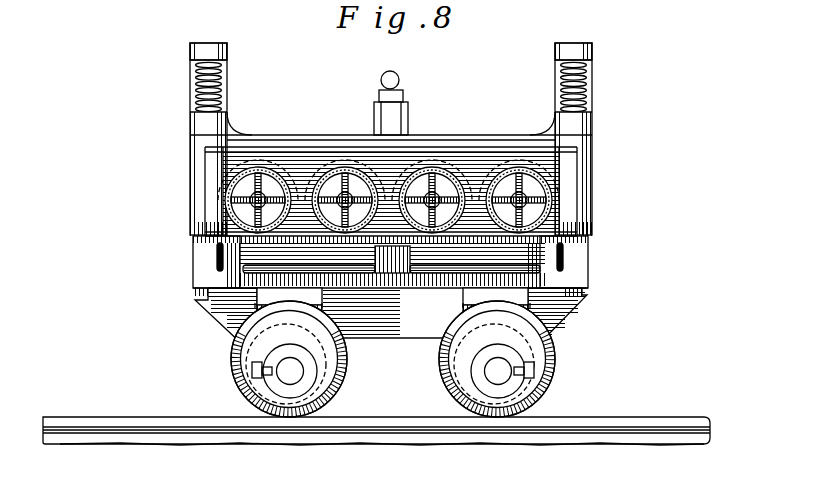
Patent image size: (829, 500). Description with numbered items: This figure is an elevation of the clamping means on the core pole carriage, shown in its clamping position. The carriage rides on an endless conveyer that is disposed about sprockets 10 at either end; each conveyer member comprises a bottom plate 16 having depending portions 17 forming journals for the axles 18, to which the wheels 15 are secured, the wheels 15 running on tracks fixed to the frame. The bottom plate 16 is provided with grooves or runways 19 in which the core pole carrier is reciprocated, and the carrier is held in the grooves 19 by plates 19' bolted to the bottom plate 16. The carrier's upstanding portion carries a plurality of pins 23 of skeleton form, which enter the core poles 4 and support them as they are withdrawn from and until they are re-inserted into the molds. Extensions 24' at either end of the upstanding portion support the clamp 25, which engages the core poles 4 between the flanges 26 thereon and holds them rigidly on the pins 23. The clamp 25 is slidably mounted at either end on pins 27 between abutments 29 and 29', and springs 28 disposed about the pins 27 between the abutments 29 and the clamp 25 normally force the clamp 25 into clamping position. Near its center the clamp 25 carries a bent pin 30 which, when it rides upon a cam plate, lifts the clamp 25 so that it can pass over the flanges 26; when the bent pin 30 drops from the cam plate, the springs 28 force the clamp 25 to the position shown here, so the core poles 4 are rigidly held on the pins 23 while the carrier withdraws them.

The core pole 4 is at (282, 229).
The sprocket 10 is at (563, 437).
The wheel 15 is at (350, 370).
The bottom plate 16 is at (440, 280).
The depending portion 17 is at (310, 306).
The axle 18 is at (262, 380).
The groove 19 is at (400, 299).
The plate 19' is at (393, 244).
The pin 23 is at (246, 178).
The extension 24' is at (399, 139).
The clamp 25 is at (440, 137).
The flange 26 is at (220, 245).
The pin 27 is at (192, 102).
The spring 28 is at (224, 83).
The abutment 29 is at (391, 54).
The abutment 29' is at (392, 213).
The bent pin 30 is at (400, 78).